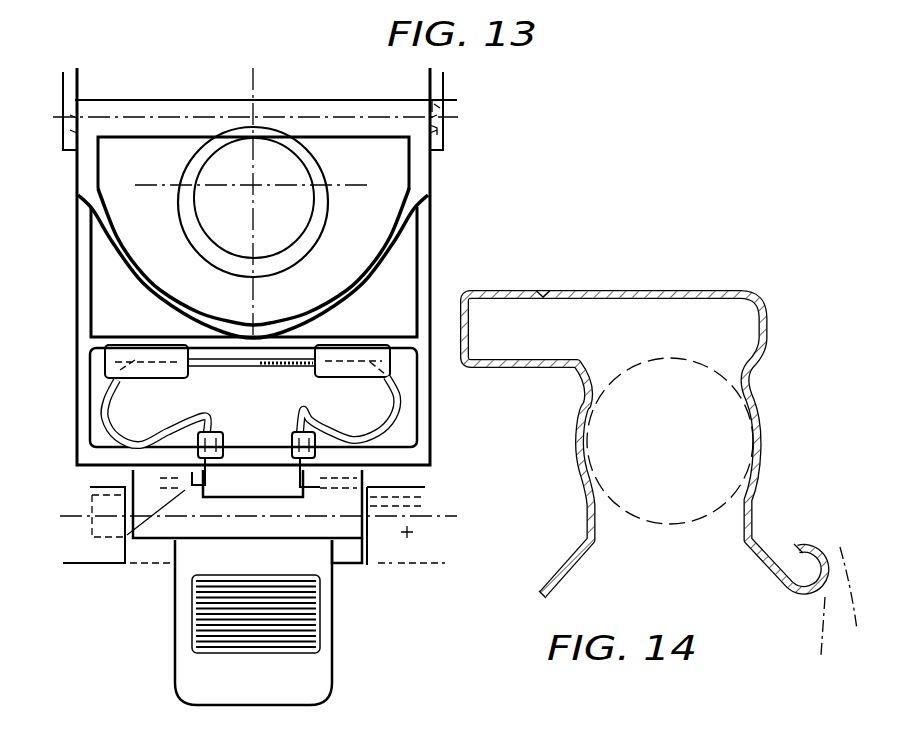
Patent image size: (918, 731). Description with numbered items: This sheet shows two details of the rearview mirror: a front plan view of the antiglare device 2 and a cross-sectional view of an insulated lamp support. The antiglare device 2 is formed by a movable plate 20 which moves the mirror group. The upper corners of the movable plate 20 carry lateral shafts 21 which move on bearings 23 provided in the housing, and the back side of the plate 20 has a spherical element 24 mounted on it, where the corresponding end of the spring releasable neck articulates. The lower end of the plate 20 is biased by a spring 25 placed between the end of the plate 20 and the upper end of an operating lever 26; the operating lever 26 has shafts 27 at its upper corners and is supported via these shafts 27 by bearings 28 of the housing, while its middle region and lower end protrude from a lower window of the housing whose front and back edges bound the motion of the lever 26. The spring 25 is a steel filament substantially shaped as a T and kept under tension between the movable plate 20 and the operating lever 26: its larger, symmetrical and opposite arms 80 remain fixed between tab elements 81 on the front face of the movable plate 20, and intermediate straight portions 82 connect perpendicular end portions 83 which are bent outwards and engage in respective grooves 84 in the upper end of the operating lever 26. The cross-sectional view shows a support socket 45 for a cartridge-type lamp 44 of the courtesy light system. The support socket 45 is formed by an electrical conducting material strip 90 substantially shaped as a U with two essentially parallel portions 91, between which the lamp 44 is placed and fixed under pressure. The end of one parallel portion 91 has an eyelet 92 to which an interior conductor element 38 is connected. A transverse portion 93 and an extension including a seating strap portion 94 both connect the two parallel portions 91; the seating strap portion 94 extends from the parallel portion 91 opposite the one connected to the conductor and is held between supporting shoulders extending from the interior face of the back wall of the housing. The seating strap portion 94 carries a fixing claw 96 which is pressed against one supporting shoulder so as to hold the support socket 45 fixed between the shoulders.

In FIG. 13, the antiglare device 2 is at (333, 93).
In FIG. 13, the movable plate 20 is at (413, 284).
In FIG. 13, the lateral shafts 21 is at (445, 130).
In FIG. 13, the bearings 23 is at (440, 103).
In FIG. 13, the spherical element 24 is at (294, 214).
In FIG. 13, the spring 25 is at (398, 413).
In FIG. 13, the operating lever 26 is at (323, 610).
In FIG. 13, the shafts 27 is at (367, 533).
In FIG. 13, the bearings 28 is at (367, 505).
In FIG. 13, the arms 80 is at (387, 433).
In FIG. 13, the tab elements 81 is at (110, 402).
In FIG. 13, the intermediate straight portions 82 is at (170, 428).
In FIG. 13, the perpendicular end portions 83 is at (100, 497).
In FIG. 13, the grooves 84 is at (125, 537).
In FIG. 14, the axis 38 is at (830, 605).
In FIG. 14, the cartridge-type lamp 44 is at (710, 522).
In FIG. 14, the support socket 45 is at (746, 293).
In FIG. 14, the electrical conducting material strip 90 is at (760, 365).
In FIG. 14, the parallel portions 91 is at (574, 441).
In FIG. 14, the eyelet 92 is at (810, 545).
In FIG. 14, the transverse portion 93 is at (692, 290).
In FIG. 14, the seating strap portion 94 is at (528, 370).
In FIG. 14, the fixing claw 96 is at (542, 291).